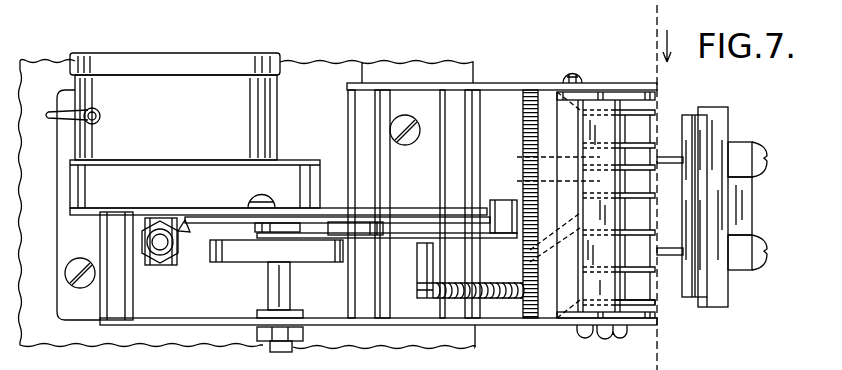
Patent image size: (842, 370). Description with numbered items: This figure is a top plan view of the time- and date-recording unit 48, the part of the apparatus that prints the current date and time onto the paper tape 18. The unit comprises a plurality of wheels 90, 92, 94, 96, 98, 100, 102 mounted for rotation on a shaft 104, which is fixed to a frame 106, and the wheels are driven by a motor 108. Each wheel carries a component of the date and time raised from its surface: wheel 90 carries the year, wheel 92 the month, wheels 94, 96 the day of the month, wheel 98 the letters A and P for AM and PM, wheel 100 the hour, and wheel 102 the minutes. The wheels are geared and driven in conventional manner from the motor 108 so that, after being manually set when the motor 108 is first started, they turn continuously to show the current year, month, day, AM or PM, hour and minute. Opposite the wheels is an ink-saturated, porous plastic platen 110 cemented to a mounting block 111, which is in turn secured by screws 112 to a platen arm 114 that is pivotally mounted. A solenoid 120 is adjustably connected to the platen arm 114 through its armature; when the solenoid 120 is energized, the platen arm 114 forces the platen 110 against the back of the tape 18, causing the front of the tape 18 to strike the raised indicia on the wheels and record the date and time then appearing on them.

The paper tape 18 is at (655, 62).
The time- and date-recording unit 48 is at (588, 62).
The wheel 90 is at (650, 299).
The wheel 92 is at (578, 265).
The wheel 94 is at (526, 262).
The wheel 96 is at (528, 240).
The wheel 98 is at (545, 183).
The wheel 100 is at (543, 157).
The wheel 102 is at (556, 90).
The shaft 104 is at (610, 330).
The frame 106 is at (512, 326).
The motor 108 is at (212, 62).
The platen 110 is at (700, 130).
The mounting block 111 is at (722, 307).
The screws 112 is at (769, 262).
The platen arm 114 is at (670, 157).
The solenoid 120 is at (225, 365).